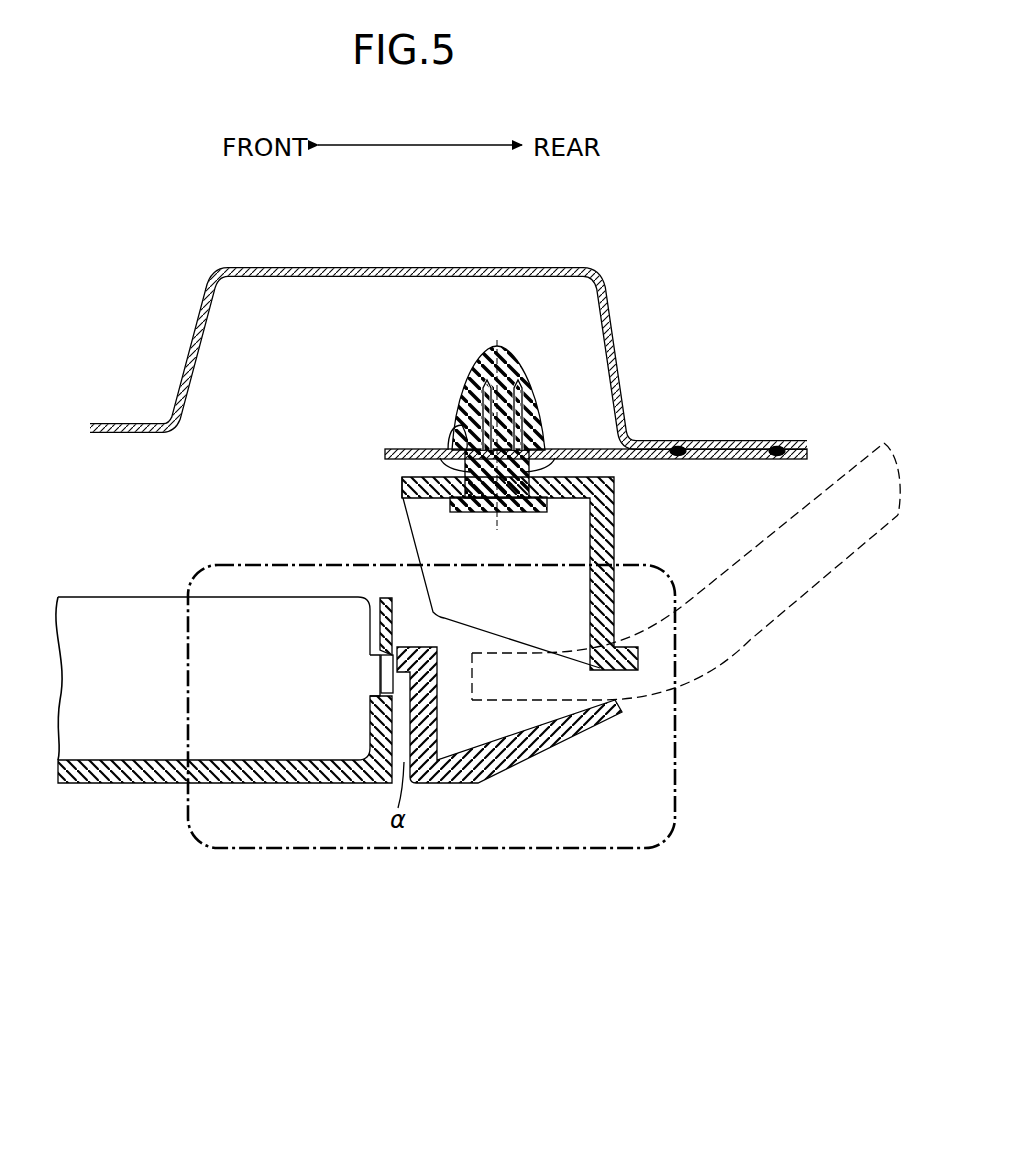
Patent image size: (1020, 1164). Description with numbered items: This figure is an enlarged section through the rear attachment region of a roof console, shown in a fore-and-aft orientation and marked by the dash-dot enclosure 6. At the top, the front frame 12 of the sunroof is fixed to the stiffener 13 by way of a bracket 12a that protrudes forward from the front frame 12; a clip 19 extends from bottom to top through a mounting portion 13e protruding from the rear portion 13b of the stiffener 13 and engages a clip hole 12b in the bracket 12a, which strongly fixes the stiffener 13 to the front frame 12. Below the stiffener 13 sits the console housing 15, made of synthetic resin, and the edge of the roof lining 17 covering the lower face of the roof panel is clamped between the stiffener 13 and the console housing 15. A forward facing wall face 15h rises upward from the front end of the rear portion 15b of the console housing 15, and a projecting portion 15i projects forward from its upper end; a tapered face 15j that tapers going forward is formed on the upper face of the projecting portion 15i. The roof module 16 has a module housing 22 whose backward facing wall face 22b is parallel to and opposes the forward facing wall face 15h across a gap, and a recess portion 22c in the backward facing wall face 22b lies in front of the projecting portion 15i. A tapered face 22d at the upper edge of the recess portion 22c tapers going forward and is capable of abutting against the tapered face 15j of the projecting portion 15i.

The engagement structure 6 is at (571, 864).
The front frame 12 is at (548, 266).
The bracket 12a is at (568, 450).
The clip hole 12b is at (465, 436).
The stiffener 13 is at (521, 566).
The rear portion 13b is at (614, 604).
The mounting portion 13e is at (400, 488).
The console housing 15 is at (484, 705).
The rear portion 15b is at (570, 740).
The forward facing wall face 15h is at (438, 702).
The projecting portion 15i is at (392, 665).
The tapered face 15j is at (398, 652).
The roof module 16 is at (128, 590).
The roof lining 17 is at (795, 648).
The clip 19 is at (477, 372).
The module housing 22 is at (216, 727).
The backward facing wall face 22b is at (380, 620).
The recess portion 22c is at (378, 683).
The tapered face 22d is at (378, 662).